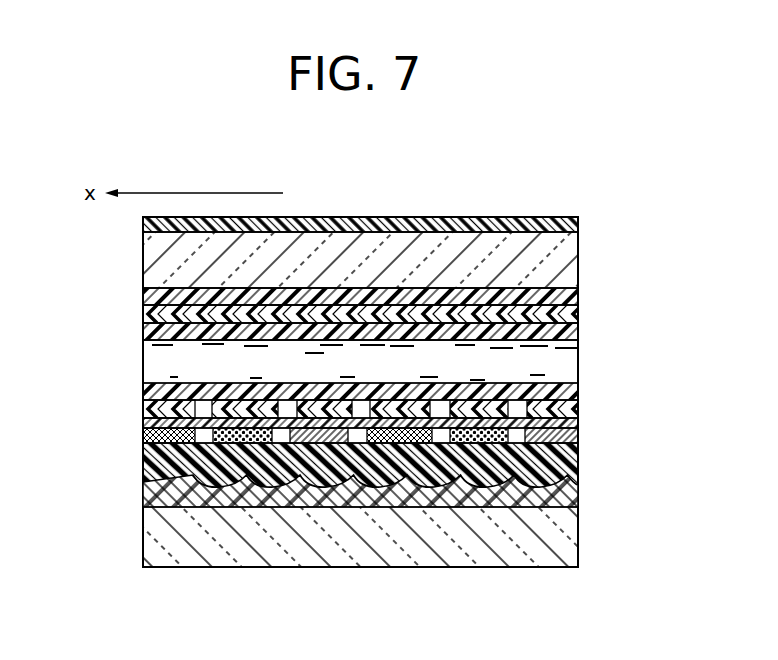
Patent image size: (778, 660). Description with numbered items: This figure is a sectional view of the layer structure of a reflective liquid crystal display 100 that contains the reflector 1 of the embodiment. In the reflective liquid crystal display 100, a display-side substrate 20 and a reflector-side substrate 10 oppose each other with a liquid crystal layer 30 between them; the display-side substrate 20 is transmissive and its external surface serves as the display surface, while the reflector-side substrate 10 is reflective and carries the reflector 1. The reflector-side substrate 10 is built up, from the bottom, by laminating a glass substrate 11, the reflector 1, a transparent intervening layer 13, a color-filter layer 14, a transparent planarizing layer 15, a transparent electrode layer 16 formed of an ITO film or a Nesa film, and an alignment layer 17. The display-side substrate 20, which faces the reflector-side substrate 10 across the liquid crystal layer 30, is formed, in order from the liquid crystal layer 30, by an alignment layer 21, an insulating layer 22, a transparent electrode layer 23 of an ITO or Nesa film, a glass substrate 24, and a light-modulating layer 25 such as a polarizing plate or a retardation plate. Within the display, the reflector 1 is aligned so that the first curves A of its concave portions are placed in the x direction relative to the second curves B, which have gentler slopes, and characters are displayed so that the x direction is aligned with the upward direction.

The reflective liquid crystal display 100 is at (434, 190).
The reflector-side substrate 10 is at (299, 449).
The display-side substrate 20 is at (433, 278).
The liquid crystal layer 30 is at (578, 363).
The reflector 1 is at (143, 492).
The glass substrate 11 is at (325, 537).
The transparent intervening layer 13 is at (143, 455).
The color-filter layer 14 is at (143, 436).
The transparent planarizing layer 15 is at (143, 423).
The transparent electrode layer 16 is at (143, 409).
The alignment layer 17 is at (143, 391).
The alignment layer 21 is at (403, 337).
The insulating layer 22 is at (578, 318).
The transparent electrode layer 23 is at (578, 299).
The glass substrate 24 is at (578, 262).
The light-modulating layer 25 is at (578, 226).
The first curves A is at (196, 481).
The second curves B is at (252, 482).